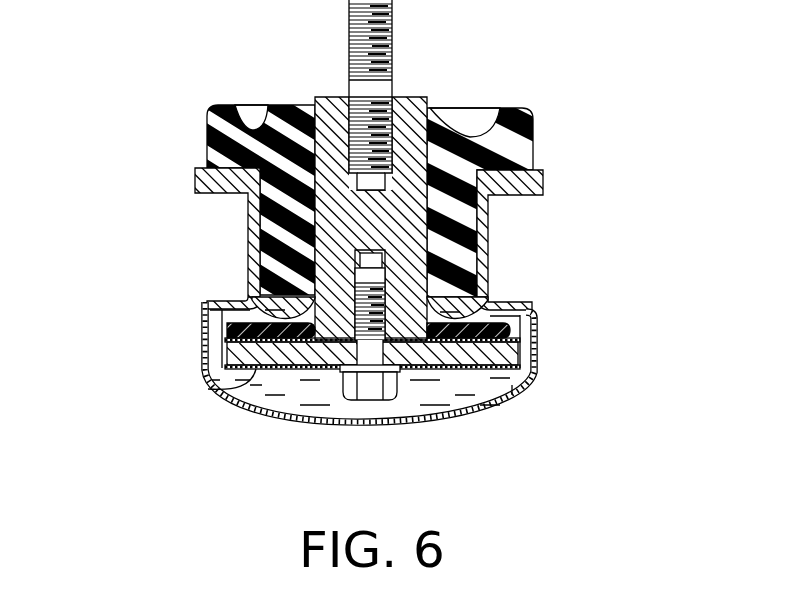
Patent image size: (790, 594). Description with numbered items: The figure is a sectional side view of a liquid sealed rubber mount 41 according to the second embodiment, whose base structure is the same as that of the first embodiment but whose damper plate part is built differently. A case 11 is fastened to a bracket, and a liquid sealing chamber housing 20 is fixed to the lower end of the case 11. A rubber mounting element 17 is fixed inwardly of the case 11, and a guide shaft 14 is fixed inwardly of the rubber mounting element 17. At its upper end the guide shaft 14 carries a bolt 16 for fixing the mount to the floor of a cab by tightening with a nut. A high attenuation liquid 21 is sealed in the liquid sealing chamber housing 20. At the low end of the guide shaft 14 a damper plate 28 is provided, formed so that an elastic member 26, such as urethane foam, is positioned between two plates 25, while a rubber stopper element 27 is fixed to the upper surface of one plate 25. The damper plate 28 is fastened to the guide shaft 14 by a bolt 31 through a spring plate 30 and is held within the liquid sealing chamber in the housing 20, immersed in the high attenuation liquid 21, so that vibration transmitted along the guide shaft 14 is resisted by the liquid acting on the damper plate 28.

The case 11 is at (488, 240).
The guide shaft 14 is at (412, 98).
The bolt 16 is at (349, 22).
The rubber mounting element 17 is at (525, 152).
The liquid sealing chamber housing 20 is at (535, 365).
The high attenuation liquid 21 is at (473, 388).
The plates 25 is at (225, 362).
The elastic member 26 is at (222, 397).
The rubber stopper element 27 is at (222, 323).
The damper plate 28 is at (103, 295).
The spring plate 30 is at (345, 372).
The bolt 31 is at (373, 388).
The liquid sealed rubber mount 41 is at (566, 98).